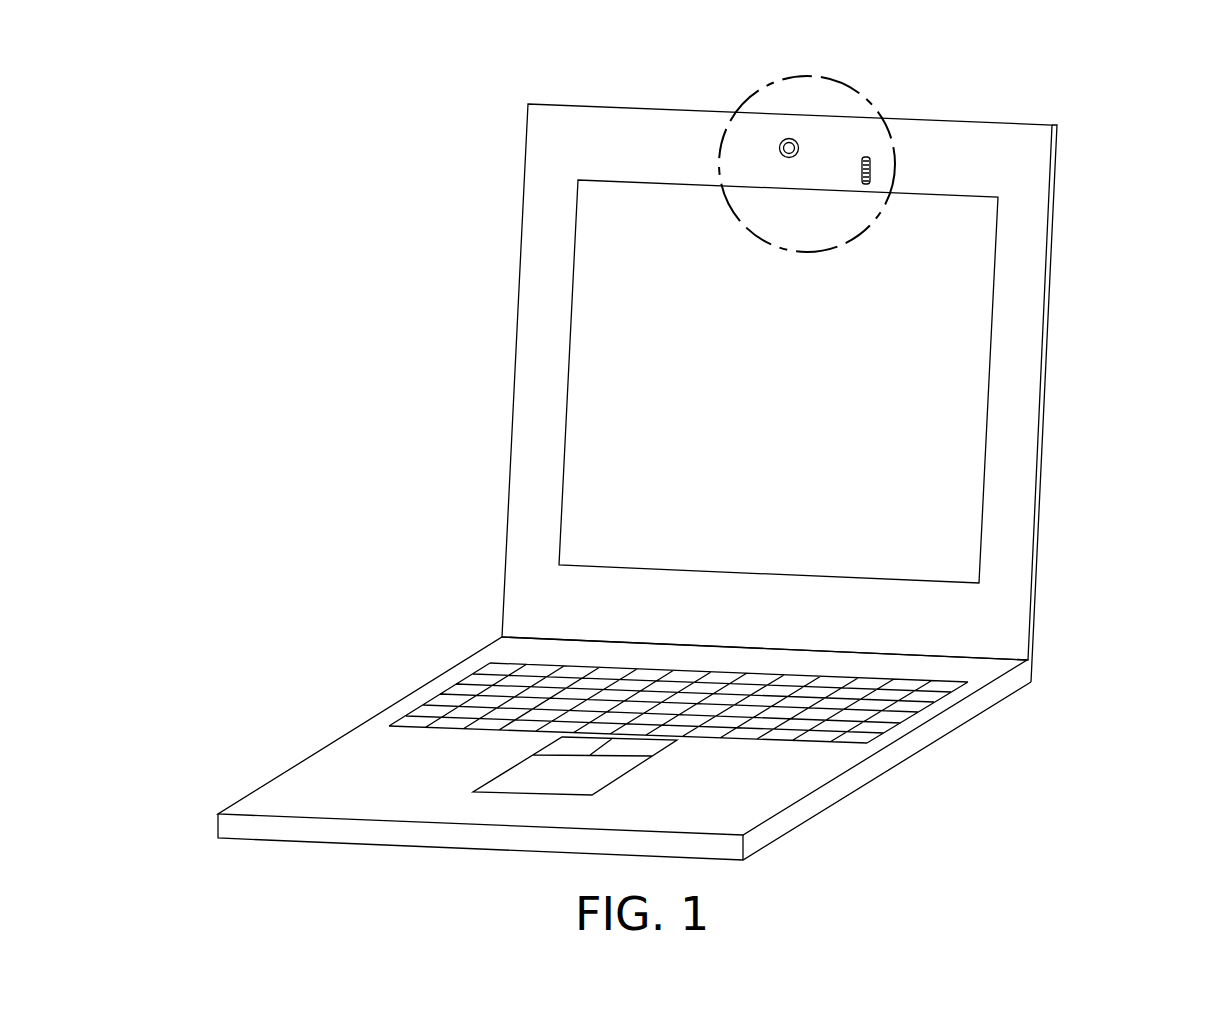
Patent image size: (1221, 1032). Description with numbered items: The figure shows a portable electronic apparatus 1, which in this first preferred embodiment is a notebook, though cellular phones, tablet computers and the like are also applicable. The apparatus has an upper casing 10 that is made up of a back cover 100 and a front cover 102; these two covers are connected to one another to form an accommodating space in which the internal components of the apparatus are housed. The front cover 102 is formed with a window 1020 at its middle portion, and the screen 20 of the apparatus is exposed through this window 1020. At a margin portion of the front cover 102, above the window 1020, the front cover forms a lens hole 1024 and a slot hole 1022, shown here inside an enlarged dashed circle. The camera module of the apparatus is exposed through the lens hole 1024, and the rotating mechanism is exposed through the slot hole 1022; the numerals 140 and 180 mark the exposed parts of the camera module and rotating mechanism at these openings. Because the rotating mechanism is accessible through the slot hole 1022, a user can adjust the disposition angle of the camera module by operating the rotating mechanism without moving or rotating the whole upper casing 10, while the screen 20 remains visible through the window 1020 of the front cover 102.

The portable electronic apparatus 1 is at (322, 128).
The upper casing 10 is at (1128, 255).
The back cover 100 is at (1043, 368).
The front cover 102 is at (1015, 300).
The window 1020 is at (983, 565).
The slot hole 1022 is at (872, 170).
The lens hole 1024 is at (779, 147).
The camera lens 140 is at (788, 138).
The sensor 180 is at (866, 156).
The screen 20 is at (937, 497).